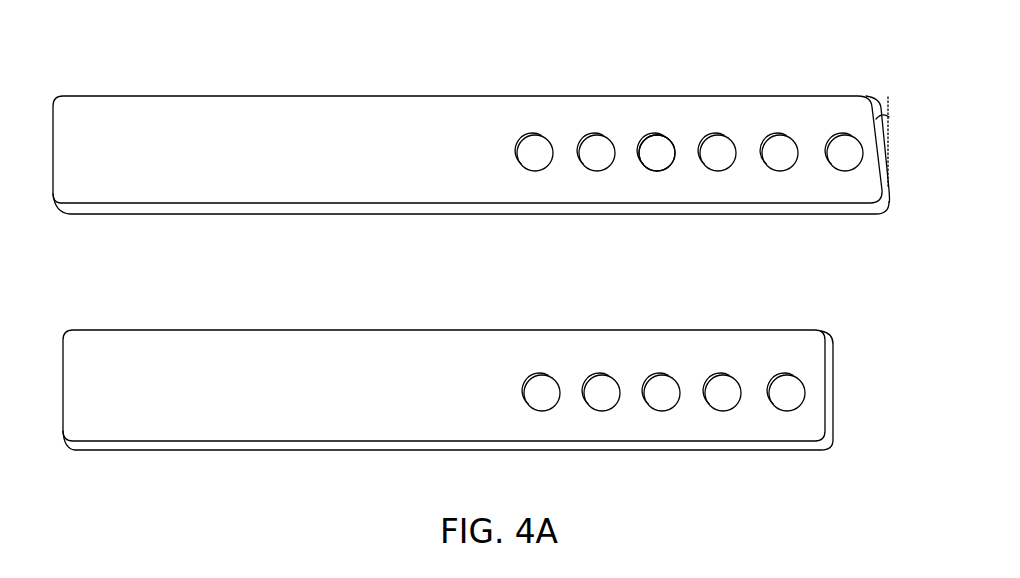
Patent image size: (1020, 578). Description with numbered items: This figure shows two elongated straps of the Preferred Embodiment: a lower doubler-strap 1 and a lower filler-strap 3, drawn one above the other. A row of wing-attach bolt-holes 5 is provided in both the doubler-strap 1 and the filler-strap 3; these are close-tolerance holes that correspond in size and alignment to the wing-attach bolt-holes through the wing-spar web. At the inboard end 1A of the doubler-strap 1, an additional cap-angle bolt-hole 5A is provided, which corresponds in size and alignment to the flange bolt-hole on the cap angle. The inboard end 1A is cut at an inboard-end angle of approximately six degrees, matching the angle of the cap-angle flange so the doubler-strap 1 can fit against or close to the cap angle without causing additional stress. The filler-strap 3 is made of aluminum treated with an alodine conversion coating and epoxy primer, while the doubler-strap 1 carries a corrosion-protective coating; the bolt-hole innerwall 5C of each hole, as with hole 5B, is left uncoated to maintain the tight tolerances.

The lower doubler-strap 1 is at (259, 135).
The inboard end 1A is at (885, 193).
The lower filler-strap 3 is at (216, 372).
The wing-attach bolt-holes 5 is at (597, 160).
The cap-angle bolt-hole 5A is at (838, 150).
The first hole 5B is at (535, 137).
The bolt-hole innerwall 5C is at (650, 140).